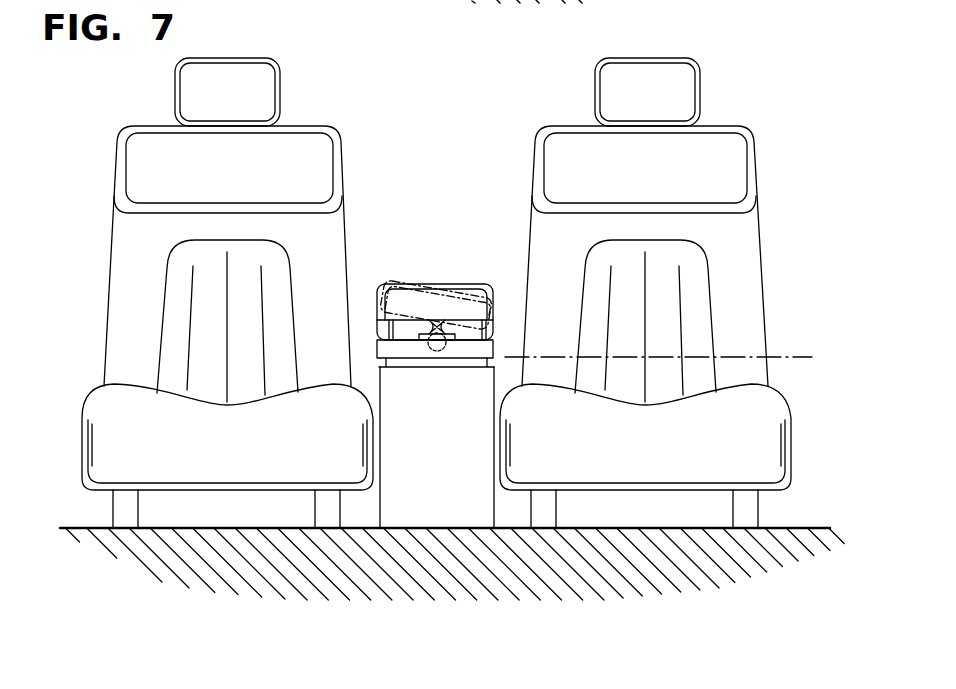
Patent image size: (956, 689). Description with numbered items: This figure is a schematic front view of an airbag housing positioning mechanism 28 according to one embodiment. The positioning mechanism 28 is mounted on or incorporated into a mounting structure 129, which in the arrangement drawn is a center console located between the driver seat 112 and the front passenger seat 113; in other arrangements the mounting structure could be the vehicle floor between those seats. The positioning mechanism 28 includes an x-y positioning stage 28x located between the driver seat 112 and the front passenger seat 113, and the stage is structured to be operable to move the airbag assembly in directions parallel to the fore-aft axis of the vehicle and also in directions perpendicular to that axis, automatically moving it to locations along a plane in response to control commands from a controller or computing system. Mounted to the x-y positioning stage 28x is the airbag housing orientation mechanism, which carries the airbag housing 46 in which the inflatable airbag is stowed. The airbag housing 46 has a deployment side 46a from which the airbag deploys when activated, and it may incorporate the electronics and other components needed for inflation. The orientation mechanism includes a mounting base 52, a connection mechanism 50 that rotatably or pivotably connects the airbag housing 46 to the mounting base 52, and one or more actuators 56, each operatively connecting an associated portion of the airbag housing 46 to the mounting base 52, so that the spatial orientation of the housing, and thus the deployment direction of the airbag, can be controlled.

The front passenger seat 113 is at (165, 122).
The driver seat 112 is at (700, 143).
The actuator 56 is at (378, 319).
The deployment side 46a is at (403, 272).
The airbag housing 46 is at (478, 284).
The connection mechanism 50 is at (437, 322).
The mounting base 52 is at (378, 345).
The x-y positioning stage 28x is at (431, 368).
The mounting structure 129 is at (478, 384).
The airbag housing positioning mechanism 28 is at (433, 393).